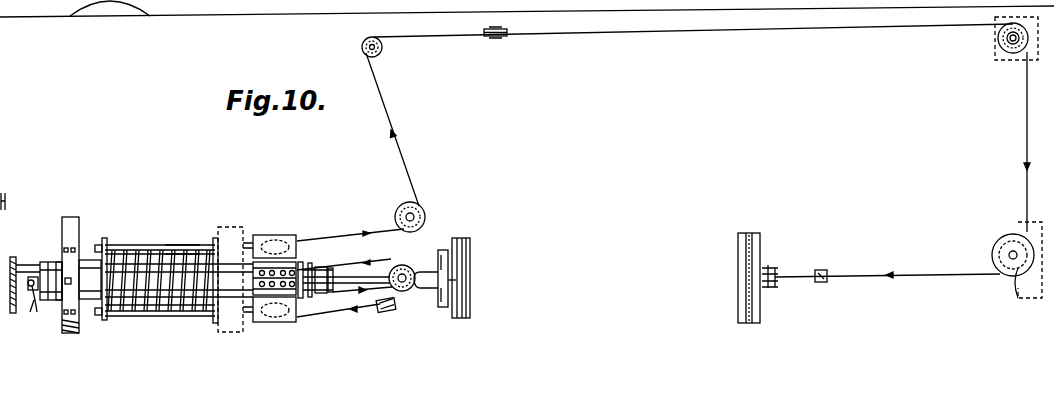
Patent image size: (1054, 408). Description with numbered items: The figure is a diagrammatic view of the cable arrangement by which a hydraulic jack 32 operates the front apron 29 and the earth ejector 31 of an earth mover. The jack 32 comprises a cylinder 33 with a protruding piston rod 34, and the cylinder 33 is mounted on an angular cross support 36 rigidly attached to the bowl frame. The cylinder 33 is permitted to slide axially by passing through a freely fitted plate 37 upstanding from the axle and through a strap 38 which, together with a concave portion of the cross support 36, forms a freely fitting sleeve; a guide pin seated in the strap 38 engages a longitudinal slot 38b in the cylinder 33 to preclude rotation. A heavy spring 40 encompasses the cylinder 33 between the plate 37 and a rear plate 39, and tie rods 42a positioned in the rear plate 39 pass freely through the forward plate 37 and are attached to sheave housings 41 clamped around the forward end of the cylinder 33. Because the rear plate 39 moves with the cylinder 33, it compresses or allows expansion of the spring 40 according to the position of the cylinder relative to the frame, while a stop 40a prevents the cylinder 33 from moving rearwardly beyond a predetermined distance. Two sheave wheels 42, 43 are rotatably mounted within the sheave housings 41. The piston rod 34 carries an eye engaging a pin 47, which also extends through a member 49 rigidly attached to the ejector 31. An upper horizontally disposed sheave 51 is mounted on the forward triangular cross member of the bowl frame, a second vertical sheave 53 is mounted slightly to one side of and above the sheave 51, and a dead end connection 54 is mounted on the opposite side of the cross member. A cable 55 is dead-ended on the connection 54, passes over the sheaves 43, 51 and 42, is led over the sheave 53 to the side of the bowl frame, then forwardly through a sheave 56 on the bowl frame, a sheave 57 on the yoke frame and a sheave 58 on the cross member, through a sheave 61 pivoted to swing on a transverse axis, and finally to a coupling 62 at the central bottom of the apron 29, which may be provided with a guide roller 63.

The front apron 29 is at (748, 232).
The earth ejector 31 is at (470, 248).
The hydraulic jack 32 is at (226, 268).
The cylinder 33 is at (80, 270).
The piston rod 34 is at (378, 275).
The angular cross support 36 is at (72, 217).
The plate 37 is at (214, 243).
The strap 38 is at (66, 296).
The longitudinal slot 38b is at (53, 262).
The rear plate 39 is at (105, 243).
The heavy spring 40 is at (174, 250).
The stop 40a is at (22, 270).
The sheave housings 41 is at (250, 272).
The sheave wheel 42 is at (279, 235).
The tie rods 42a is at (150, 250).
The sheave wheel 43 is at (297, 320).
The pin 47 is at (433, 258).
The member 49 is at (456, 280).
The upper horizontally disposed sheave 51 is at (411, 271).
The second vertical sheave 53 is at (405, 206).
The dead end connection 54 is at (395, 295).
The cable 55 is at (388, 112).
The sheave 56 is at (383, 50).
The sheave 57 is at (512, 29).
The sheave 58 is at (1012, 50).
The sheave 61 is at (1005, 235).
The coupling 62 is at (772, 290).
The guide roller 63 is at (828, 272).